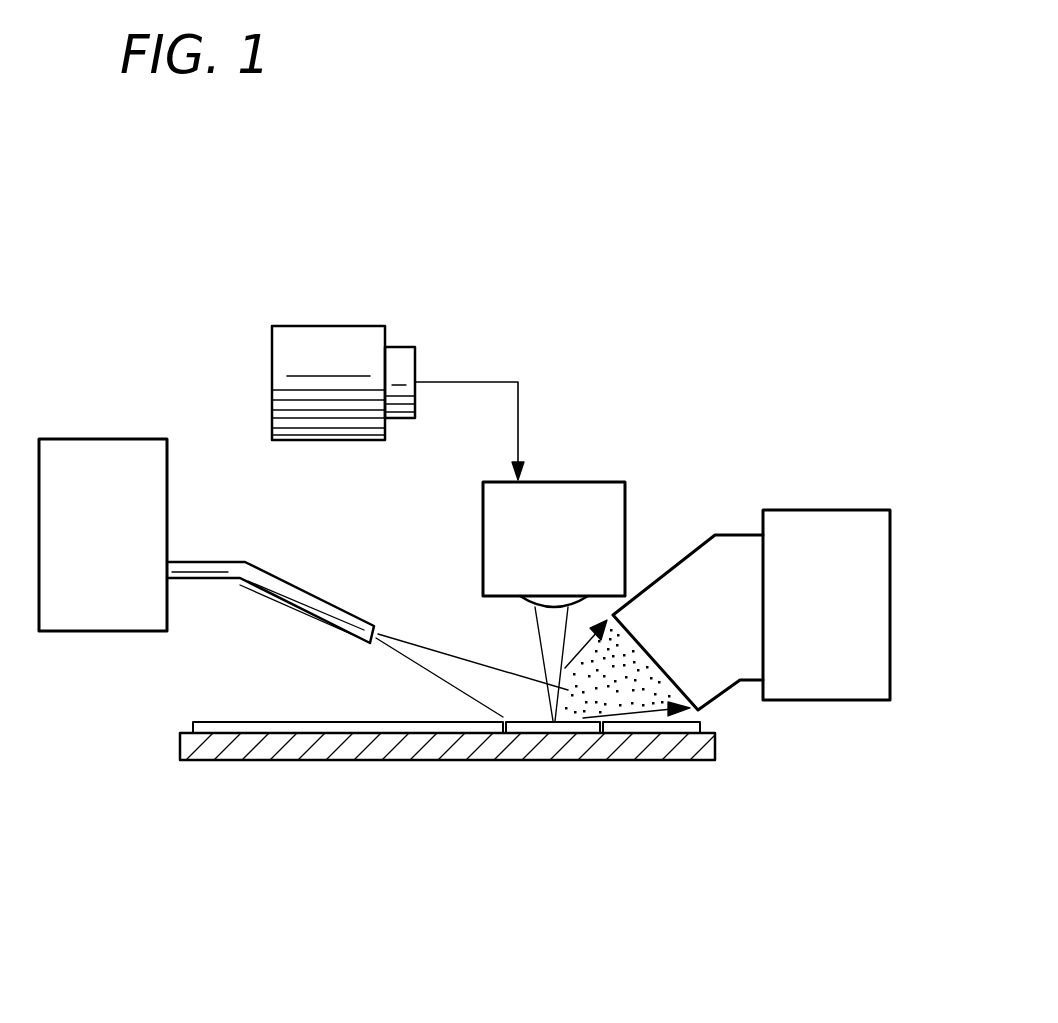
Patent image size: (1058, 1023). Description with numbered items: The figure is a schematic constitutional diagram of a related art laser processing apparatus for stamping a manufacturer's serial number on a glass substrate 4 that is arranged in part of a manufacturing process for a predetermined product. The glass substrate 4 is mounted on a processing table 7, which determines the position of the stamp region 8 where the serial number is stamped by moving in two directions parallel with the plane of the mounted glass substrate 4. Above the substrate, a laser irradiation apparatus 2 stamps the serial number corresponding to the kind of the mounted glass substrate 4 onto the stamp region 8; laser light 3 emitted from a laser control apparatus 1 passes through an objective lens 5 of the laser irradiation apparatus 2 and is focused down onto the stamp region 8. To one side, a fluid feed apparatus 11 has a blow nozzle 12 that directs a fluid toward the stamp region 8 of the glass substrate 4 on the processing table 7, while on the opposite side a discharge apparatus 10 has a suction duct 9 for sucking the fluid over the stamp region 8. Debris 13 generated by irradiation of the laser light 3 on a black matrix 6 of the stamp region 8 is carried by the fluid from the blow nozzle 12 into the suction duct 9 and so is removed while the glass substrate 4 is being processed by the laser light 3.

The laser control apparatus 1 is at (318, 326).
The laser irradiation apparatus 2 is at (587, 482).
The laser light 3 is at (540, 651).
The glass substrate 4 is at (718, 742).
The objective lens 5 is at (553, 604).
The black matrix 6 is at (193, 730).
The processing table 7 is at (518, 742).
The stamp region 8 is at (535, 721).
The suction duct 9 is at (690, 548).
The discharge apparatus 10 is at (892, 535).
The fluid feed apparatus 11 is at (108, 439).
The blow nozzle 12 is at (285, 581).
The debris 13 is at (637, 680).